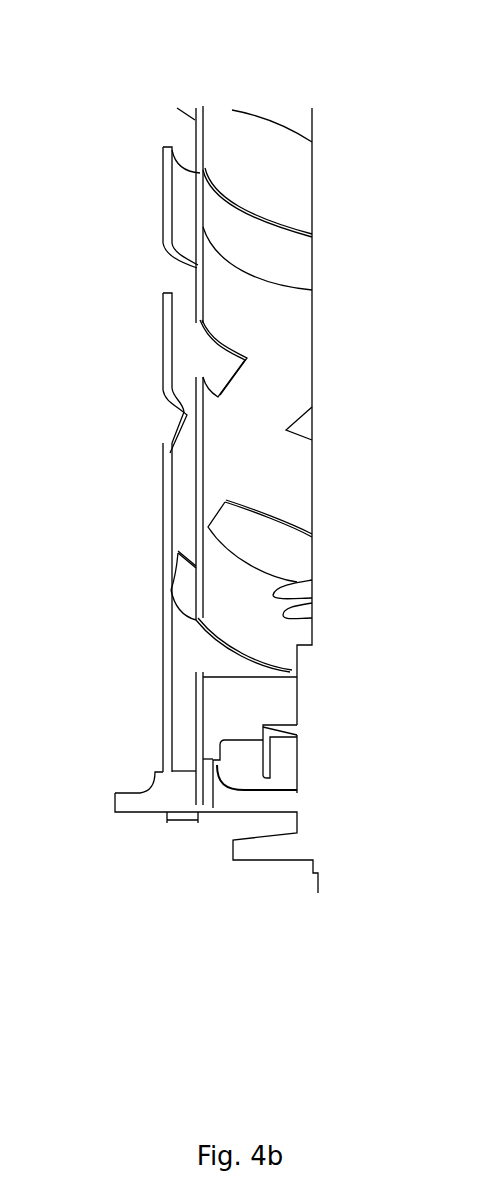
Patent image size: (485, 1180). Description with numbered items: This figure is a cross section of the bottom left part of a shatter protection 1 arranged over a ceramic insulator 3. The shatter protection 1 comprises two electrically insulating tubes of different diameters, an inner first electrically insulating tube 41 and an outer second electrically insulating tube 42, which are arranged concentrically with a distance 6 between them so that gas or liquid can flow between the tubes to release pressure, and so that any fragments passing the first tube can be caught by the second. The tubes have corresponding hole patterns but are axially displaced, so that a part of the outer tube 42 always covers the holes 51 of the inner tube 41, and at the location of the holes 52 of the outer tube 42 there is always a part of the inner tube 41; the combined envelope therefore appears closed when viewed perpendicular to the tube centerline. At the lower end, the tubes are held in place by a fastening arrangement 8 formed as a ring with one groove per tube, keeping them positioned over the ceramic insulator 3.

The shatter protection 1 is at (150, 70).
The second electrically insulating tube 42 is at (165, 165).
The first electrically insulating tube 41 is at (198, 280).
The holes of the inner tube 51 is at (200, 356).
The holes of the outer tube 52 is at (168, 418).
The ceramic insulator 3 is at (310, 544).
The fastening arrangement 8 is at (126, 780).
The distance 6 is at (182, 835).